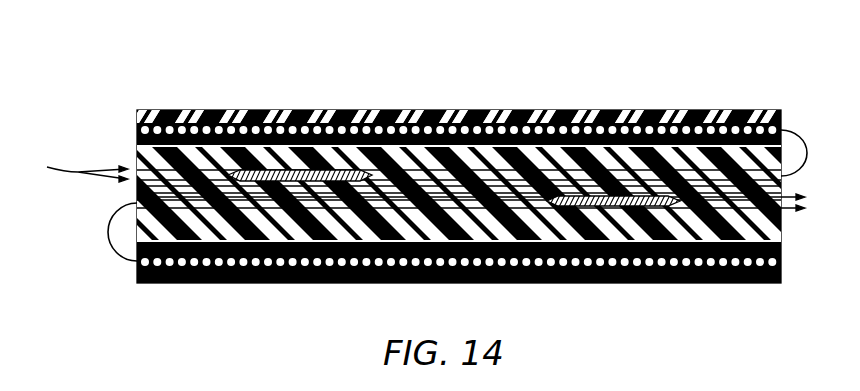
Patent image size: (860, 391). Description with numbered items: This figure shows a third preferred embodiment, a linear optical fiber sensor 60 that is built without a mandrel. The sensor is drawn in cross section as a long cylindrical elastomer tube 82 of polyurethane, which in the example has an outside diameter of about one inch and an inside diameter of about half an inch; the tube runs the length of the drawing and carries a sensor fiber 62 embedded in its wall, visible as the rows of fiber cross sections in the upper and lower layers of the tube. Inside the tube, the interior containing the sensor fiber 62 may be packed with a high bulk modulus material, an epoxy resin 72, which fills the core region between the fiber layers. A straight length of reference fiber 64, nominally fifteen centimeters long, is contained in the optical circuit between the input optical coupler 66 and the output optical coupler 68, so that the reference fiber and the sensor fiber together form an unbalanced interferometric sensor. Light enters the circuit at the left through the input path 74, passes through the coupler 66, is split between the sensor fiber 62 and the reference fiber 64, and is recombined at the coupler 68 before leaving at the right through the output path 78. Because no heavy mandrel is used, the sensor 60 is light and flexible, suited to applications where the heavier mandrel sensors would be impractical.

The linear optical fiber sensor 60 is at (439, 169).
The sensor fiber 62 is at (108, 226).
The reference fiber 64 is at (137, 197).
The input optical coupler 66 is at (270, 137).
The output optical coupler 68 is at (590, 245).
The epoxy resin 72 is at (137, 153).
The input light paths 74 is at (75, 169).
The output light paths 78 is at (819, 211).
The elastomer tube 82 is at (318, 128).